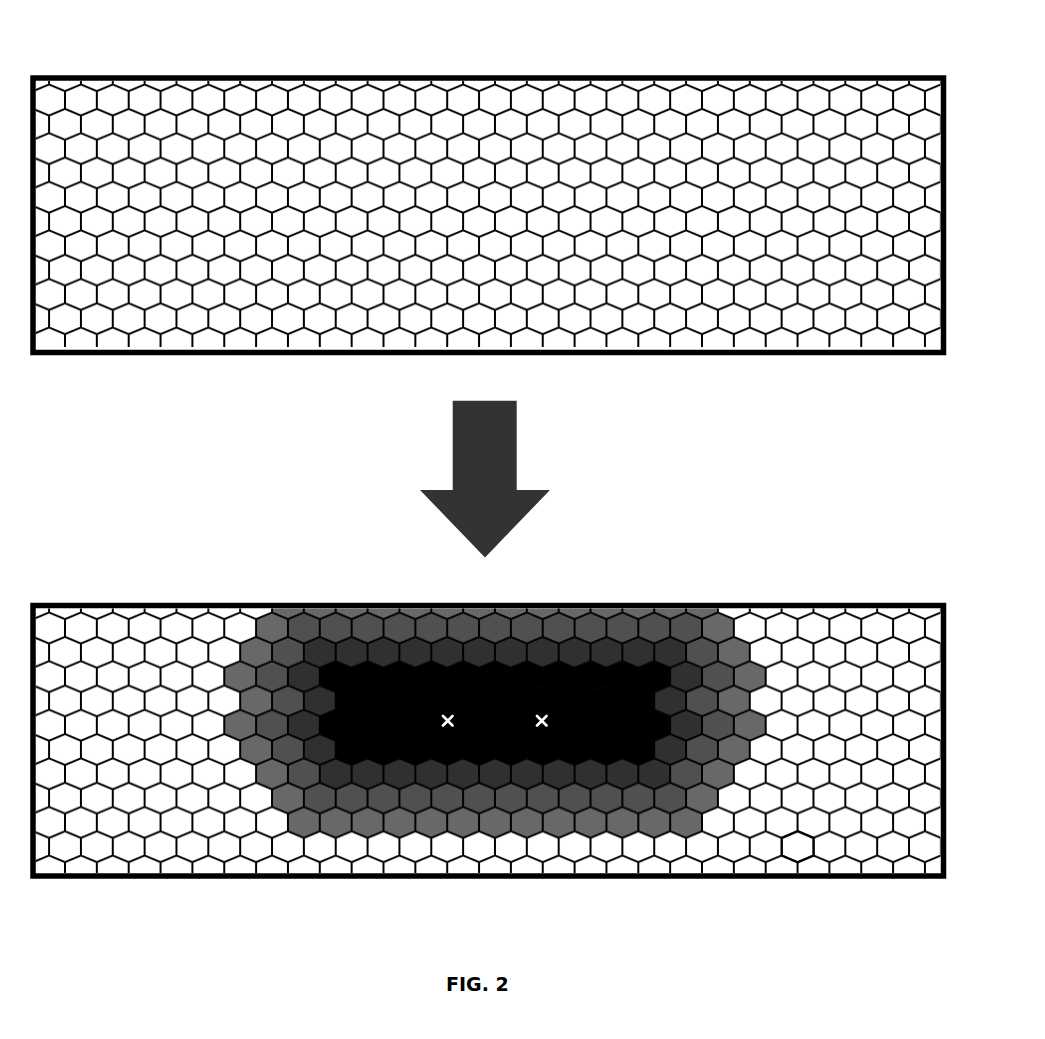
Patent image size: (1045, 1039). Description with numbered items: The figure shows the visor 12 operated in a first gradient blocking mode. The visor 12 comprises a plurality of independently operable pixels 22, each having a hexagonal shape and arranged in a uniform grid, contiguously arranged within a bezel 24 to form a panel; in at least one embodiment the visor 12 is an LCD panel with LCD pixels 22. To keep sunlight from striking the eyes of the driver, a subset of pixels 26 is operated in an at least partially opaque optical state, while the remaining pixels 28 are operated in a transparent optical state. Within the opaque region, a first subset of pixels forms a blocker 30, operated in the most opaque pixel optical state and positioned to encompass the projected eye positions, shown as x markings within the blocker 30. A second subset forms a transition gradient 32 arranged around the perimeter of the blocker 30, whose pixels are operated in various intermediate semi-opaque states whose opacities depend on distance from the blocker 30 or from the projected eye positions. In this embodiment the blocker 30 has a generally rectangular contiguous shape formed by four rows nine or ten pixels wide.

The visor 12 is at (488, 483).
The pixels 22 is at (304, 98).
The bezel 24 is at (132, 76).
The subset of pixels 26 is at (710, 628).
The remaining pixels 28 is at (798, 848).
The blocker 30 is at (584, 765).
The transition gradient 32 is at (445, 805).